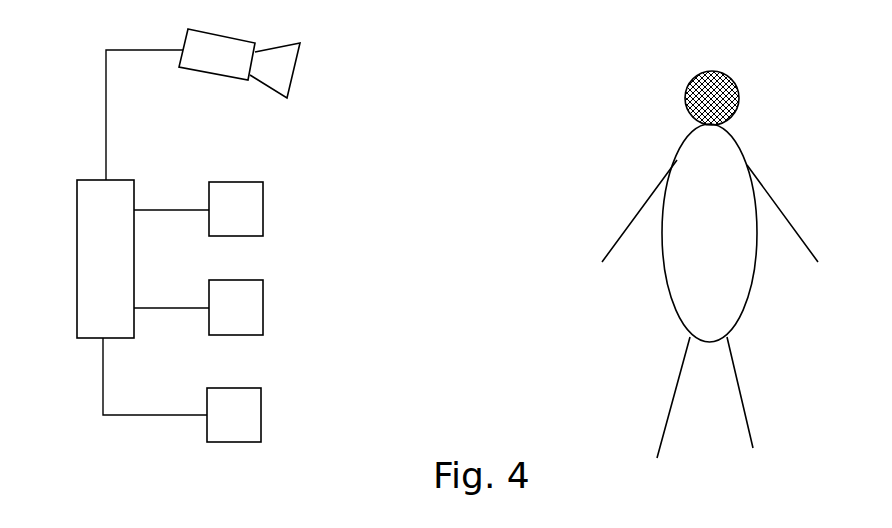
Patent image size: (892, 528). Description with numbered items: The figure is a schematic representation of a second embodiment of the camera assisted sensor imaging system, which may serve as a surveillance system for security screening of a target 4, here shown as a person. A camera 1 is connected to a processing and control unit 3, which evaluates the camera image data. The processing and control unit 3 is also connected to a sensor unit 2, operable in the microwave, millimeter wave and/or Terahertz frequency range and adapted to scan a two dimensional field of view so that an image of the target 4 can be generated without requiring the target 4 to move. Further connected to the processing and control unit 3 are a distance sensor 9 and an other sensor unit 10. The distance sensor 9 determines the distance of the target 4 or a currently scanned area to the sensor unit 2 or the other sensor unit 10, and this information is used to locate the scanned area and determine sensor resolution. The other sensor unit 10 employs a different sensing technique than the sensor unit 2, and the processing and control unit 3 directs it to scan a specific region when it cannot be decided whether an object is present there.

The camera 1 is at (212, 75).
The sensor unit 2 is at (265, 210).
The processing and control unit 3 is at (75, 260).
The target 4 is at (752, 288).
The distance sensor 9 is at (265, 308).
The other sensor unit 10 is at (265, 415).